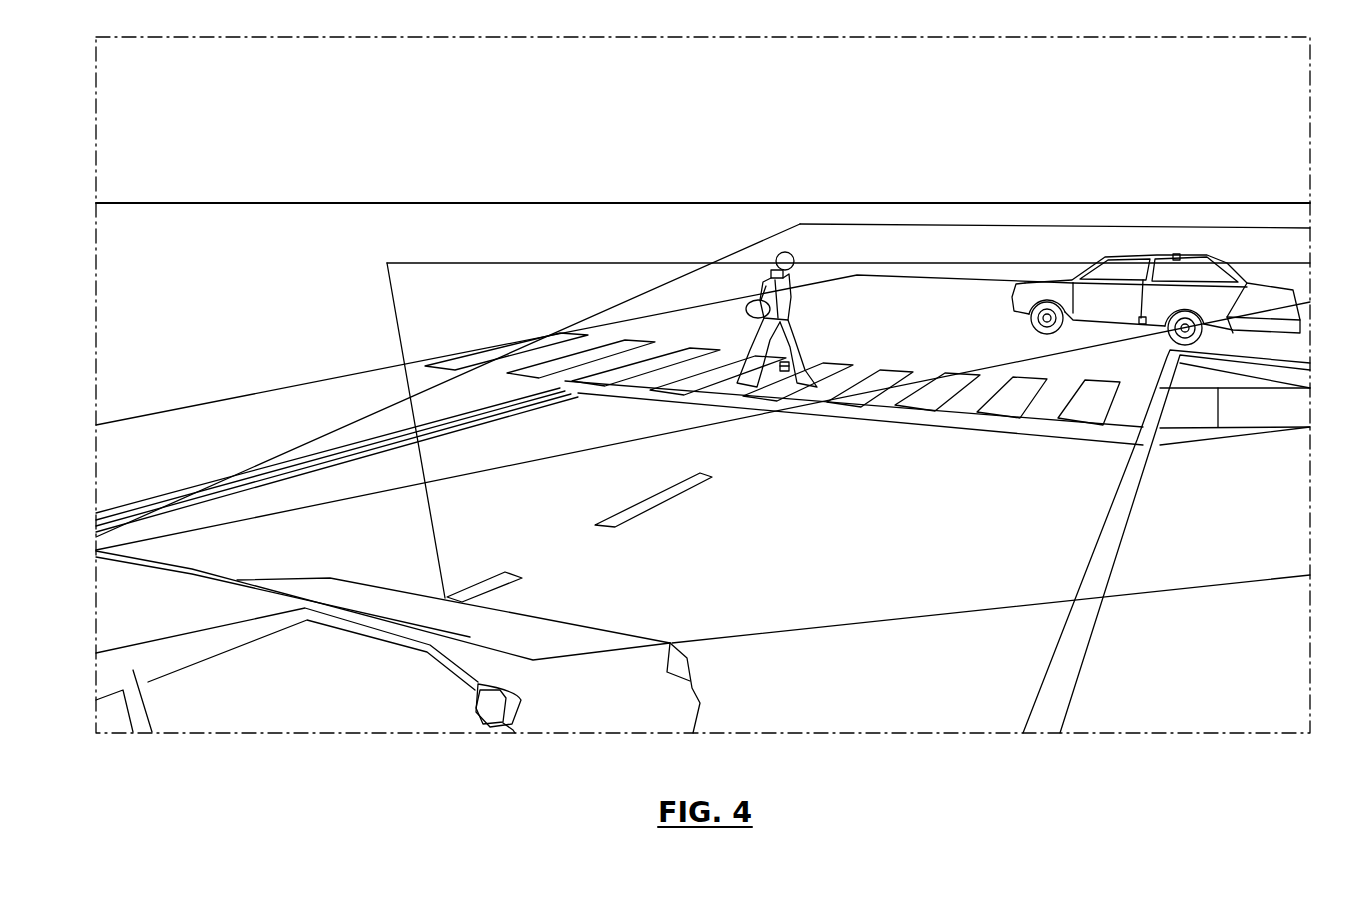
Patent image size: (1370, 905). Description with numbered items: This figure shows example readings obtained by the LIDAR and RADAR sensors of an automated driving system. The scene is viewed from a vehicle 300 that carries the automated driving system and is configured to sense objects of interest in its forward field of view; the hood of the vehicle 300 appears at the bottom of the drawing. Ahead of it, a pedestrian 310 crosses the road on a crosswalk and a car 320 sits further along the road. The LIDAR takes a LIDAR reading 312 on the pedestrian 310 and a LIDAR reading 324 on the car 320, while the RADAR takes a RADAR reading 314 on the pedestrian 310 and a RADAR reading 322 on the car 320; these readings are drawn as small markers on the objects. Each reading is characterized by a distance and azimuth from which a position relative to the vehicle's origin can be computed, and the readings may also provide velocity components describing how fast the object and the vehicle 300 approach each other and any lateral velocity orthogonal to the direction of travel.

The vehicle 300 is at (623, 680).
The pedestrian 310 is at (797, 278).
The LIDAR reading 312 is at (767, 266).
The RADAR reading 314 is at (791, 366).
The car 320 is at (1230, 262).
The RADAR reading 322 is at (1142, 316).
The LIDAR reading 324 is at (1176, 254).